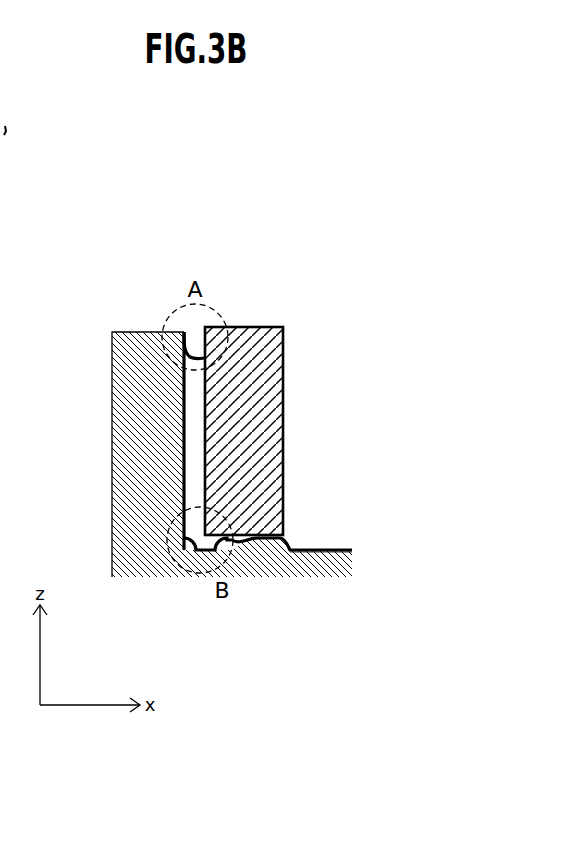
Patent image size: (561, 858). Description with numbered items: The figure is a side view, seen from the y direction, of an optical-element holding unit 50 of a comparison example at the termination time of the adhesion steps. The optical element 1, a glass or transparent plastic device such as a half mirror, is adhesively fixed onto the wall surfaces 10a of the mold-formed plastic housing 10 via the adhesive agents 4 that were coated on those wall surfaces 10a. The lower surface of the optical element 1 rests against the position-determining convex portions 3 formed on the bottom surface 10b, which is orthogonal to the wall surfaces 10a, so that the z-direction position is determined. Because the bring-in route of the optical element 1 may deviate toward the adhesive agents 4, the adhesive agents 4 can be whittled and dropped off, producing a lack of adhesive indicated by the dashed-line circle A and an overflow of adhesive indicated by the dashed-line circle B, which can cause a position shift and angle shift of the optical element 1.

The optical element 1 is at (285, 340).
The position-determining convex portions 3 is at (284, 539).
The adhesive agents 4 is at (177, 395).
The housing 10 is at (130, 430).
The wall surfaces 10a is at (178, 468).
The bottom surface 10b is at (322, 553).
The optical-element holding unit 50 is at (343, 165).